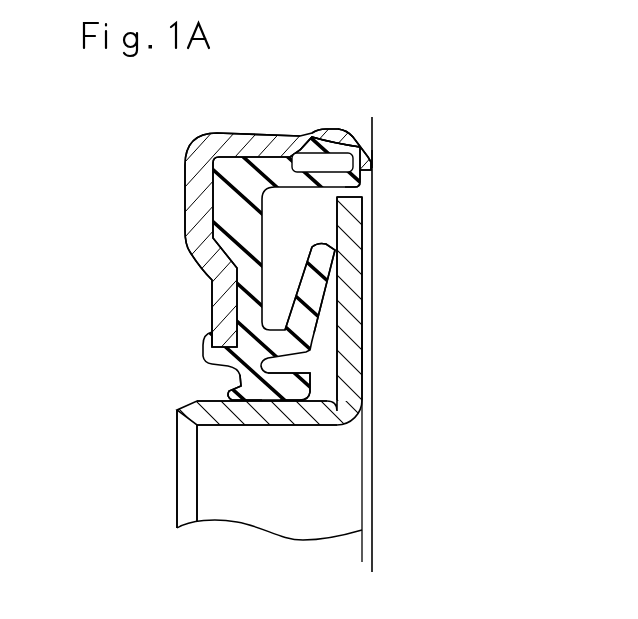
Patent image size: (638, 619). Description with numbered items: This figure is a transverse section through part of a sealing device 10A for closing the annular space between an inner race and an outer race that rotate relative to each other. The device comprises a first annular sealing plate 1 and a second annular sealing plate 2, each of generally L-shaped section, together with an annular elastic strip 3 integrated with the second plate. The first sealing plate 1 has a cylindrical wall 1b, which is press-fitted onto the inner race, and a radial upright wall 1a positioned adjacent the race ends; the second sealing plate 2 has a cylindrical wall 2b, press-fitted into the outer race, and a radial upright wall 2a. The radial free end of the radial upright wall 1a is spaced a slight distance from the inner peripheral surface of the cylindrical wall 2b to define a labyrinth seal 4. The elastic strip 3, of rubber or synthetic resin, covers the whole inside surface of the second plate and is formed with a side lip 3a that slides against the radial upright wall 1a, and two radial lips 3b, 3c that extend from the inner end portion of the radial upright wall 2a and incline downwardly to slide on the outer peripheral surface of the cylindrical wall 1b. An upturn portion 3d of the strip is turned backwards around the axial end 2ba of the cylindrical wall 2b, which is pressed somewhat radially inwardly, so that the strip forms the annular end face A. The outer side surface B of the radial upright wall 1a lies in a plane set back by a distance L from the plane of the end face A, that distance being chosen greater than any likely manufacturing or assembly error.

The first annular sealing plate 1 is at (243, 428).
The radial upright wall 1a is at (353, 322).
The cylindrical wall 1b is at (285, 428).
The second annular sealing plate 2 is at (185, 193).
The radial upright wall 2a is at (196, 222).
The cylindrical wall 2b is at (252, 143).
The axial end 2ba is at (348, 145).
The annular elastic strip 3 is at (267, 235).
The side lip 3a is at (318, 283).
The radial lip 3b is at (303, 378).
The radial lip 3c is at (238, 382).
The upturn portion 3d is at (325, 140).
The labyrinth seal 4 is at (365, 189).
The annular end face A is at (374, 160).
The outer side surface B is at (363, 350).
The sealing device 10A is at (383, 237).
The set-back distance L is at (333, 556).